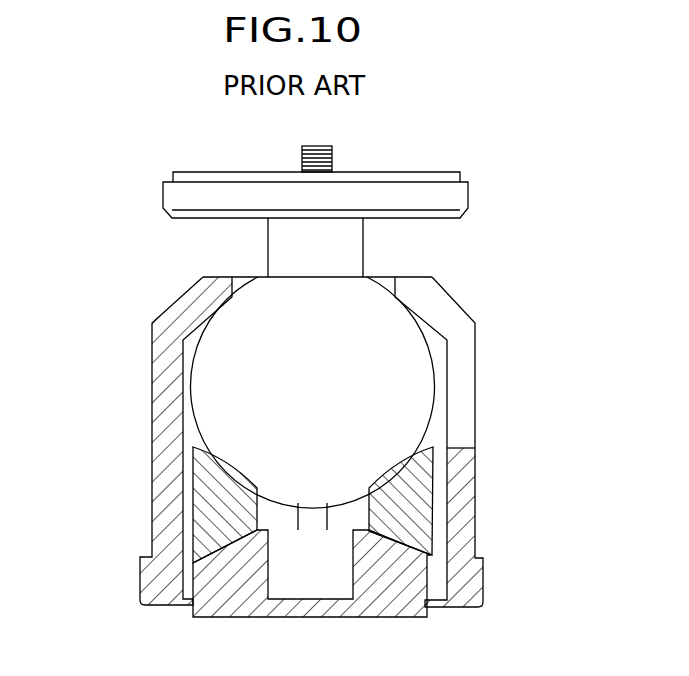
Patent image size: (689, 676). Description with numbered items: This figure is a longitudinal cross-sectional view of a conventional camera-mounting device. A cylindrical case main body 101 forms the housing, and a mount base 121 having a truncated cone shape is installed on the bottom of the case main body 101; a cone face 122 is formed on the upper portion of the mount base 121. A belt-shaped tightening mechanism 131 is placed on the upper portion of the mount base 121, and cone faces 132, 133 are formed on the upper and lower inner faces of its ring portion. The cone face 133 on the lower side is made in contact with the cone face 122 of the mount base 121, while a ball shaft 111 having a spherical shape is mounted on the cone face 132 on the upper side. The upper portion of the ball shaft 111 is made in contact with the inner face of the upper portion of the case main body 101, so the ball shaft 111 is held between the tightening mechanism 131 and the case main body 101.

The case main body 101 is at (457, 398).
The ball shaft 111 is at (372, 358).
The mount base 121 is at (230, 580).
The cone face 122 is at (393, 555).
The tightening mechanism 131 is at (198, 507).
The cone face 132 is at (428, 497).
The cone face 133 is at (370, 538).